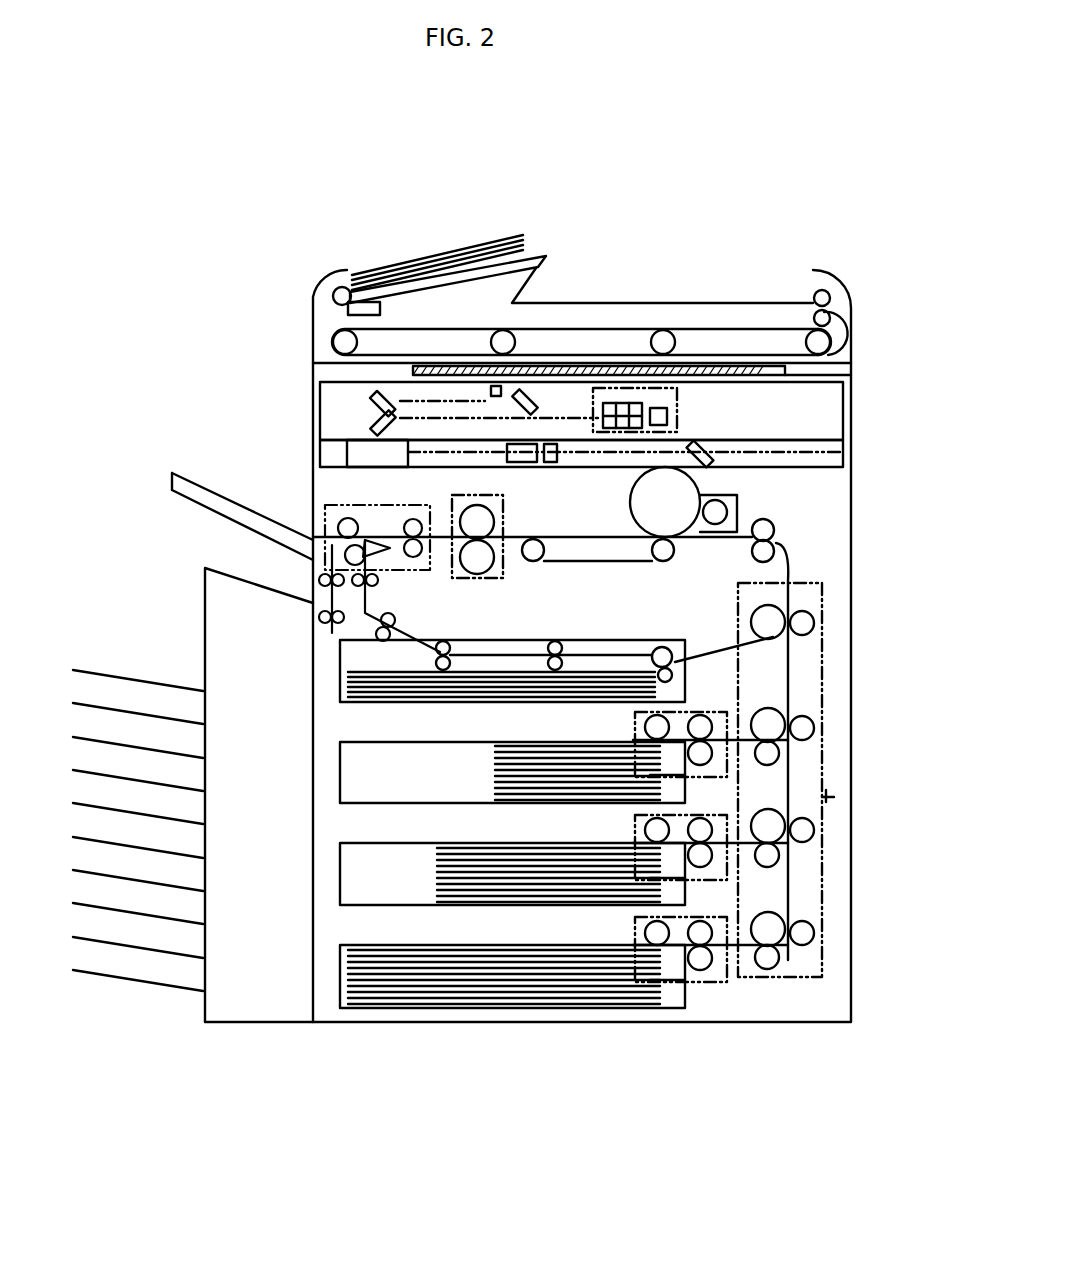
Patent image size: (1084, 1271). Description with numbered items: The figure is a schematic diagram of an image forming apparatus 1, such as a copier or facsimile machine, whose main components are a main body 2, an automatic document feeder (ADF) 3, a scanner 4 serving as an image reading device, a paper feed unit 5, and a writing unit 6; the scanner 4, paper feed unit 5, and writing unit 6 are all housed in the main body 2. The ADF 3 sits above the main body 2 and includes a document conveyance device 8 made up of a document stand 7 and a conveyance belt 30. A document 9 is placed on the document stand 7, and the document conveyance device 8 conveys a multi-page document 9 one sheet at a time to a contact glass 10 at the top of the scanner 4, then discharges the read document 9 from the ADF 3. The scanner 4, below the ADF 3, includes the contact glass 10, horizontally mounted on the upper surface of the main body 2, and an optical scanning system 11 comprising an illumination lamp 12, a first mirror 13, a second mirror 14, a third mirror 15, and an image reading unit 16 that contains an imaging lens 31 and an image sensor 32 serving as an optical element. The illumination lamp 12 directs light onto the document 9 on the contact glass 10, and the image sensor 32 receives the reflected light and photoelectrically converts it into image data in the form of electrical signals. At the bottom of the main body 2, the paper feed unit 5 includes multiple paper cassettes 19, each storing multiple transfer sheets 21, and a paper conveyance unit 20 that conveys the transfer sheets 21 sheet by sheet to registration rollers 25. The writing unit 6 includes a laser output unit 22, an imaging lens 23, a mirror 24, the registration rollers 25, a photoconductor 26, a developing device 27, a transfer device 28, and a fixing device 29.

The image forming apparatus 1 is at (290, 190).
The main body 2 is at (852, 610).
The automatic document feeder 3 is at (853, 324).
The scanner 4 is at (840, 410).
The paper feed unit 5 is at (830, 713).
The writing unit 6 is at (835, 452).
The document stand 7 is at (545, 256).
The document conveyance device 8 is at (748, 302).
The document 9 is at (418, 268).
The contact glass 10 is at (455, 365).
The optical scanning system 11 is at (557, 406).
The illumination lamp 12 is at (490, 390).
The first mirror 13 is at (528, 395).
The second mirror 14 is at (375, 395).
The third mirror 15 is at (372, 418).
The image reading unit 16 is at (680, 394).
The paper cassettes 19 is at (340, 985).
The paper conveyance unit 20 is at (836, 797).
The transfer sheets 21 is at (572, 790).
The laser output unit 22 is at (355, 455).
The imaging lens 23 is at (550, 465).
The mirror 24 is at (712, 450).
The registration rollers 25 is at (778, 548).
The photoconductor 26 is at (630, 505).
The developing device 27 is at (738, 500).
The transfer device 28 is at (668, 556).
The fixing device 29 is at (500, 580).
The conveyance belt 30 is at (775, 328).
The imaging lens 31 is at (622, 403).
The image sensor 32 is at (658, 408).